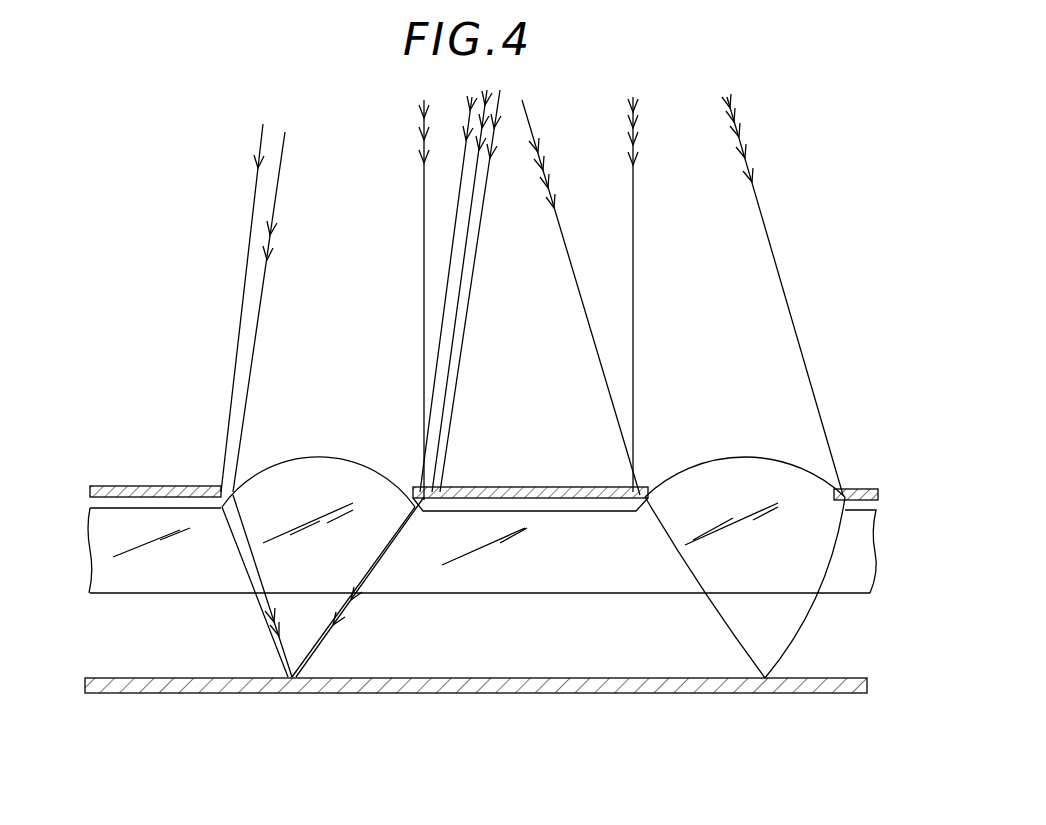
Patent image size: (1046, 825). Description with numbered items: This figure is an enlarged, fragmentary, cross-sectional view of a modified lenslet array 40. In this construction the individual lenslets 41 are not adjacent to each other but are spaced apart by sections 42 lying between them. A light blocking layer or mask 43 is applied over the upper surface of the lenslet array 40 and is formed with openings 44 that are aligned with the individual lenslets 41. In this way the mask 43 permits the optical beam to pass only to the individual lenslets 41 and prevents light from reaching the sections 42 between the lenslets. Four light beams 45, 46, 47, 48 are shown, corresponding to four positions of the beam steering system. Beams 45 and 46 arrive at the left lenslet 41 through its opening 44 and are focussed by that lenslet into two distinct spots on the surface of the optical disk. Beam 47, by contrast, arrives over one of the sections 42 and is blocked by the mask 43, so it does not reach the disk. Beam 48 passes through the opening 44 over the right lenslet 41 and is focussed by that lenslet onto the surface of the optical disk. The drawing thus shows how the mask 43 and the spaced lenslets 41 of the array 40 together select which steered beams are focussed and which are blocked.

The lenslet array 40 is at (562, 590).
The individual lenslet 41 is at (696, 458).
The section 42 is at (503, 512).
The light blocking layer or mask 43 is at (148, 486).
The opening 44 is at (228, 452).
The light beam 45 is at (252, 195).
The light beam 46 is at (275, 210).
The light beam 47 is at (424, 200).
The light beam 48 is at (535, 137).